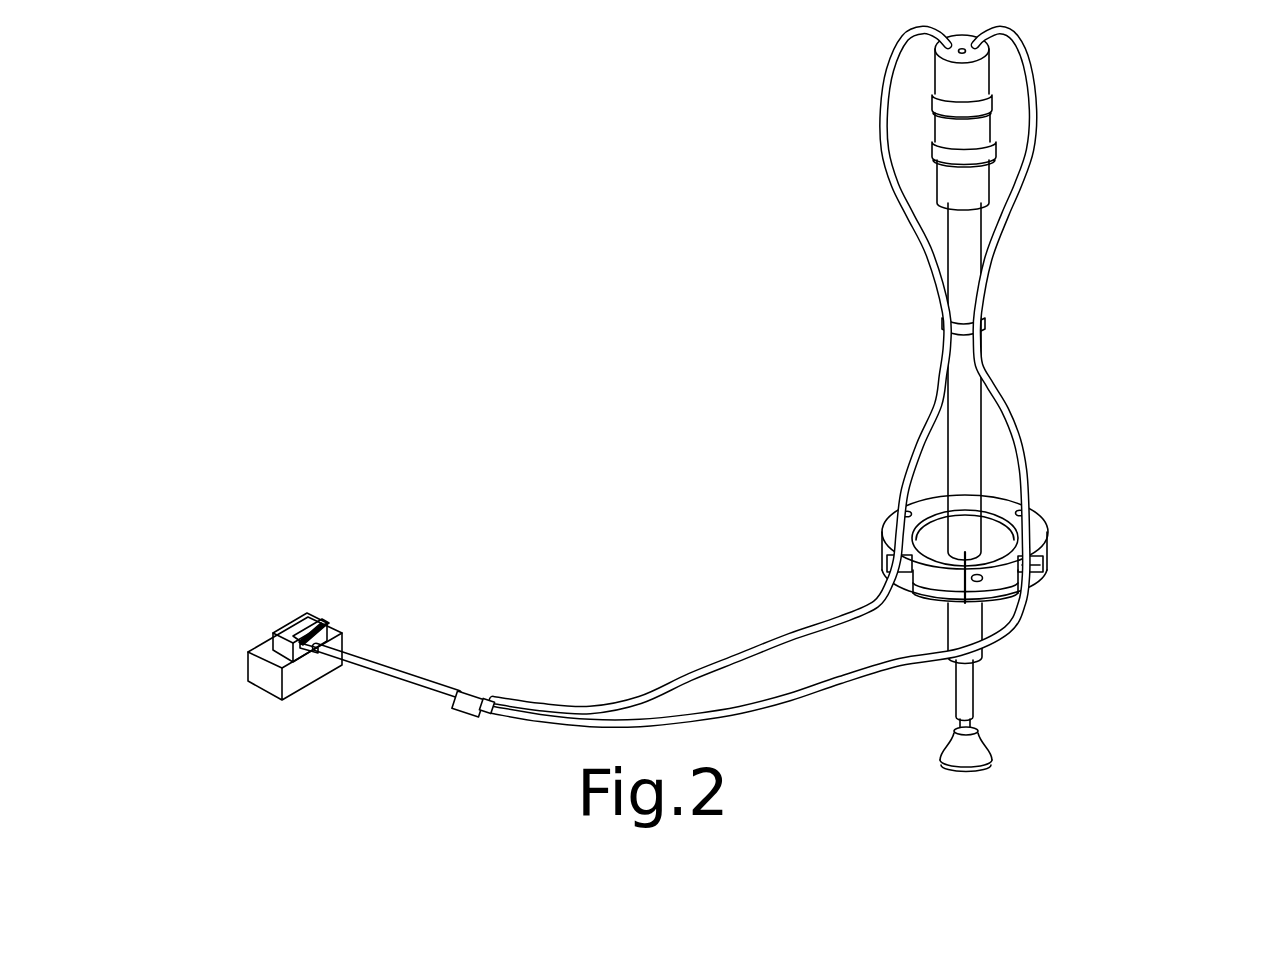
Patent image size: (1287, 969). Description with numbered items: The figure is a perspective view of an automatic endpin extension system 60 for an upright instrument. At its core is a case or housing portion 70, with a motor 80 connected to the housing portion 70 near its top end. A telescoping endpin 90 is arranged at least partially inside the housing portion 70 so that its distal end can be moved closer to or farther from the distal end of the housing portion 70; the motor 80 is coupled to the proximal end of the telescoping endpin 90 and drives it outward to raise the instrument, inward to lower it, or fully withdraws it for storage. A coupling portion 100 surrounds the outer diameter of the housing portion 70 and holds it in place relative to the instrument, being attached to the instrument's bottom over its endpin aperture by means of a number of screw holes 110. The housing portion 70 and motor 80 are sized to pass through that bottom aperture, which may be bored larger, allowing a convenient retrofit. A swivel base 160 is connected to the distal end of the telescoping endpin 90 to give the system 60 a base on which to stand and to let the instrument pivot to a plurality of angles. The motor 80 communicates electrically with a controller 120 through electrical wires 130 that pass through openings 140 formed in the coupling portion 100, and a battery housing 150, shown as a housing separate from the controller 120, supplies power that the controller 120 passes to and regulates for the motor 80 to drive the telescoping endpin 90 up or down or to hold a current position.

The automatic endpin extension system 60 is at (692, 198).
The housing portion 70 is at (962, 428).
The motor 80 is at (993, 118).
The telescoping endpin 90 is at (967, 688).
The coupling portion 100 is at (1047, 528).
The screw holes 110 is at (903, 517).
The controller 120 is at (303, 625).
The electrical wires 130 is at (743, 660).
The openings 140 is at (975, 581).
The battery housing 150 is at (308, 685).
The swivel base 160 is at (967, 752).